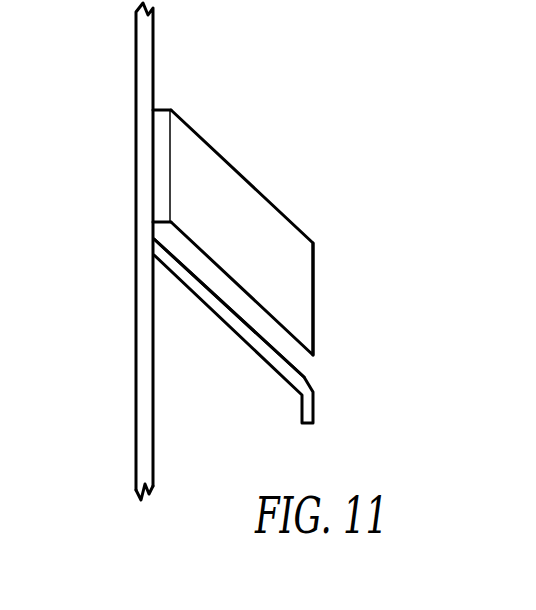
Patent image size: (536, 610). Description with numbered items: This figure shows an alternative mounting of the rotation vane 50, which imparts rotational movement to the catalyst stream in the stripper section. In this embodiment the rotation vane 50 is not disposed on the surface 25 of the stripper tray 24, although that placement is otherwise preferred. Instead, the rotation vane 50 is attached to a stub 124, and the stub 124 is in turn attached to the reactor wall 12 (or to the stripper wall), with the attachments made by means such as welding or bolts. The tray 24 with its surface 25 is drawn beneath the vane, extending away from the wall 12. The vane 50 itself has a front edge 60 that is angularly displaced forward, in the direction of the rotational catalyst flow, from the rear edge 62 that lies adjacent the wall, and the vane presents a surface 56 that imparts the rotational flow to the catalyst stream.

The reactor wall 12 is at (135, 85).
The stub 124 is at (159, 121).
The rear edge 62 is at (171, 170).
The surface 56 is at (258, 208).
The rotation vane 50 is at (252, 240).
The front edge 60 is at (313, 285).
The surface 25 is at (275, 350).
The stripper tray 24 is at (301, 373).